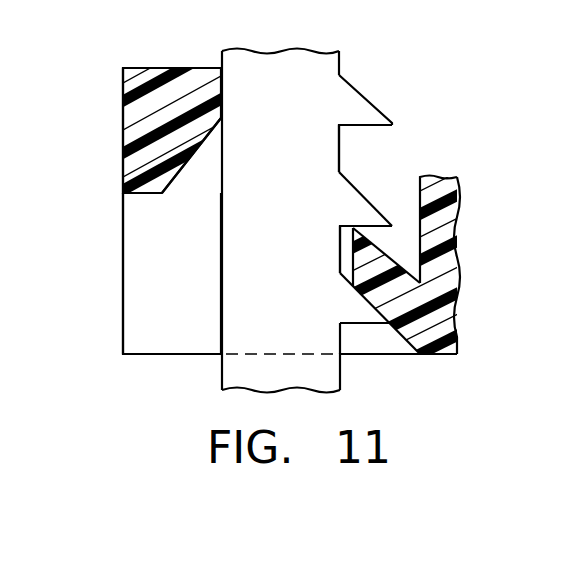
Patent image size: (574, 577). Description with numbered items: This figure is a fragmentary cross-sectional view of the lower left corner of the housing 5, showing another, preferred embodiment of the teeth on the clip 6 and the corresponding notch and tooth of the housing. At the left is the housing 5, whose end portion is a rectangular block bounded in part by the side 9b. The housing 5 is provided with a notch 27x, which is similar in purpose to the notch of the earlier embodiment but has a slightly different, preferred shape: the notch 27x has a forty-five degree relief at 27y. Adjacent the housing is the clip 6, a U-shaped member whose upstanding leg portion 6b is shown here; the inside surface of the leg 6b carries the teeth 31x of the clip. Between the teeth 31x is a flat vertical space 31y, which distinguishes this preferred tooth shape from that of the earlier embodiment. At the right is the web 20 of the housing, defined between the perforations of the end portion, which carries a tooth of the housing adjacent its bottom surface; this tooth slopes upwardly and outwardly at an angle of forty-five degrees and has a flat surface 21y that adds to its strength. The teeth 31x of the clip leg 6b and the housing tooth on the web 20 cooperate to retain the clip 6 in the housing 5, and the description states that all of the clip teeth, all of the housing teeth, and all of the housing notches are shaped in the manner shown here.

The housing 5 is at (123, 90).
The clip 6 is at (258, 390).
The leg portion 6b is at (272, 62).
The side 9b is at (123, 165).
The web 20 is at (458, 205).
The flat surface 21y is at (410, 272).
The notch 27x is at (152, 315).
The relief 27y is at (207, 153).
The teeth 31x is at (365, 92).
The flat vertical space 31y is at (338, 143).